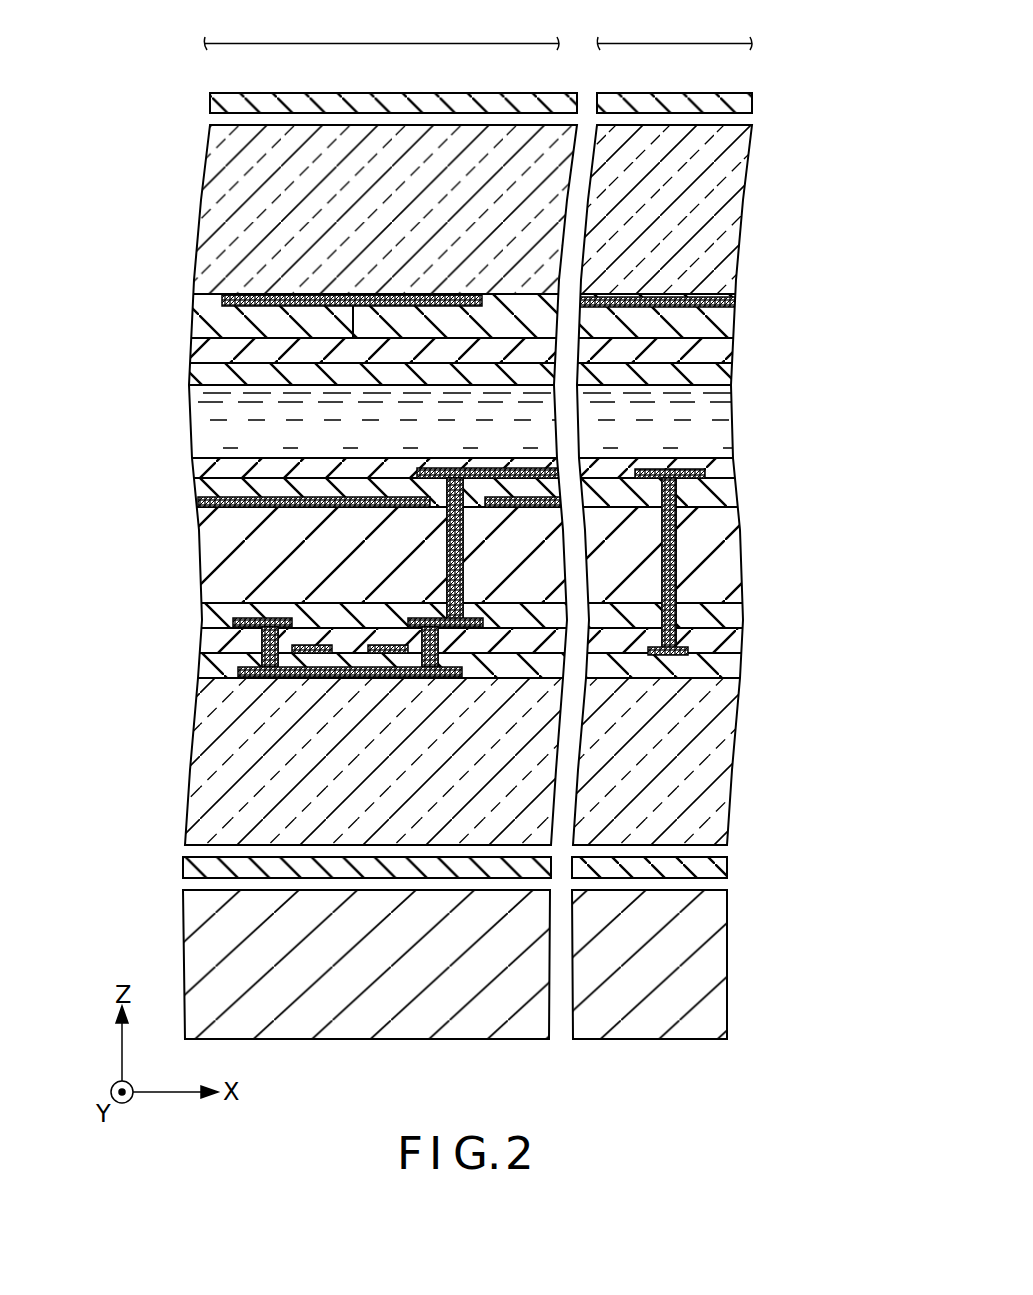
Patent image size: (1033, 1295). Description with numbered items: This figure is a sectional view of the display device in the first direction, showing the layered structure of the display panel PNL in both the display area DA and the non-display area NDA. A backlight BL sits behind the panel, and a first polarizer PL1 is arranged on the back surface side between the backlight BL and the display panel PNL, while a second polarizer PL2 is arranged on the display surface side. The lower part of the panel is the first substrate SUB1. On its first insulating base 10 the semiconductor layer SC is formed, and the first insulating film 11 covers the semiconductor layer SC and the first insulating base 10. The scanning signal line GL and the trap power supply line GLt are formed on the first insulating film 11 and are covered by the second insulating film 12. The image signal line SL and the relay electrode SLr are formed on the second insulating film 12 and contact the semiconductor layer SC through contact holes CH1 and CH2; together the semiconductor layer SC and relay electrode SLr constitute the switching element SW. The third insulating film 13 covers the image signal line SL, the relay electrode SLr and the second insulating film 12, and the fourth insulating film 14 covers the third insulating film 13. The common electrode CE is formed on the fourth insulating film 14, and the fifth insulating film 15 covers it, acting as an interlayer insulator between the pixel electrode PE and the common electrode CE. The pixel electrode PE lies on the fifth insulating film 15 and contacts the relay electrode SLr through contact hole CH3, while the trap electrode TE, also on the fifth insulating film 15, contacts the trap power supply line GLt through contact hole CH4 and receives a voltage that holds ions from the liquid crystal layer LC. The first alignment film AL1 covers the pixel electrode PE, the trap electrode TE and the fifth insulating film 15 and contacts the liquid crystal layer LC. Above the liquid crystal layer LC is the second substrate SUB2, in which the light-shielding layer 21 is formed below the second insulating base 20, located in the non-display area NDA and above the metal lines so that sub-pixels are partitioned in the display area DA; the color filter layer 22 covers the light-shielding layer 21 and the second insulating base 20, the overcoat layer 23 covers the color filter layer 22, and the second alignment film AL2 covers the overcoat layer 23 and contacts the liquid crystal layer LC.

The second polarizer PL2 is at (210, 103).
The second insulating base 20 is at (202, 197).
The light-shielding layer 21 is at (236, 295).
The color filter layer 22 is at (205, 318).
The overcoat layer 23 is at (196, 348).
The second alignment film AL2 is at (192, 378).
The second substrate SUB2 is at (112, 127).
The liquid crystal layer LC is at (198, 435).
The first alignment film AL1 is at (202, 467).
The fifth insulating film 15 is at (197, 488).
The fourth insulating film 14 is at (212, 555).
The third insulating film 13 is at (212, 618).
The second insulating film 12 is at (210, 642).
The first insulating film 11 is at (205, 673).
The first insulating base 10 is at (203, 770).
The first substrate SUB1 is at (112, 458).
The first polarizer PL1 is at (198, 870).
The backlight BL is at (708, 967).
The common electrode CE is at (315, 498).
The pixel electrode PE is at (483, 468).
The trap electrode TE is at (672, 469).
The image signal line SL is at (268, 617).
The scanning signal line GL is at (336, 641).
The relay electrode SLr is at (432, 617).
The contact hole CH1 is at (264, 667).
The contact hole CH2 is at (440, 666).
The contact hole CH3 is at (464, 565).
The contact hole CH4 is at (663, 565).
The semiconductor layer SC is at (333, 678).
The switching element SW is at (388, 692).
The trap power supply line GLt is at (670, 656).
The display panel PNL is at (775, 93).
The display area DA is at (381, 32).
The non-display area NDA is at (674, 32).